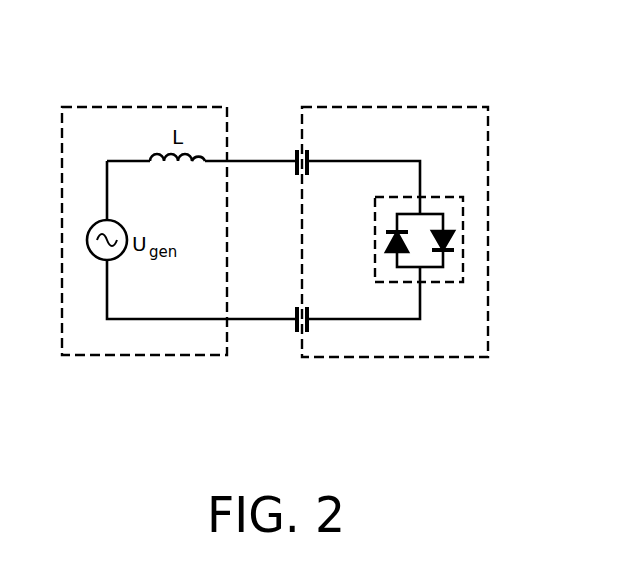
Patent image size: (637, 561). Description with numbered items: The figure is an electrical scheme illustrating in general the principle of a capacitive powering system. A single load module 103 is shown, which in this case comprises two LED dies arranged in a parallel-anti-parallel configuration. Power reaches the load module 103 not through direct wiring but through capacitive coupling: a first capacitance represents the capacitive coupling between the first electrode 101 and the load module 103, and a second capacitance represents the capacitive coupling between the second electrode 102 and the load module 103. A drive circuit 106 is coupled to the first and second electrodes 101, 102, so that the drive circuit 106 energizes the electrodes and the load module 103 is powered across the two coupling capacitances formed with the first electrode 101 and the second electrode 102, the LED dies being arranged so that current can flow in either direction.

The drive circuit 106 is at (146, 106).
The first electrode 101 is at (295, 155).
The second electrode 102 is at (295, 329).
The load module 103 is at (466, 212).